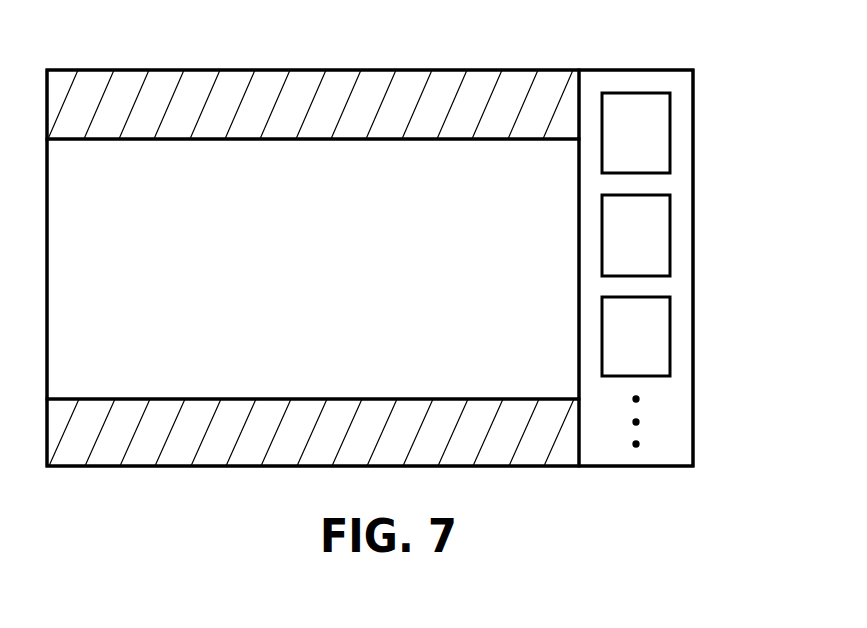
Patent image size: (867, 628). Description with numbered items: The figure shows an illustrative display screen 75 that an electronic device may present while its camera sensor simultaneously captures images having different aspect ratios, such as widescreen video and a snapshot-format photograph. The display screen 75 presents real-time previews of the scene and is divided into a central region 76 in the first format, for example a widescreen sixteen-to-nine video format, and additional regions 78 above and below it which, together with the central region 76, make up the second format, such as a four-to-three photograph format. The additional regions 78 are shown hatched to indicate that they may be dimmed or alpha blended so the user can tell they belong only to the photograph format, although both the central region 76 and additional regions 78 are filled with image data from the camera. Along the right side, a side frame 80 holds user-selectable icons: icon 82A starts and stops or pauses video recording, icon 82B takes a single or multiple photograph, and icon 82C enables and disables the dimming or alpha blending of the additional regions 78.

The display screen 75 is at (126, 32).
The central region 76 is at (327, 278).
The additional regions 78 is at (229, 83).
The side frame 80 is at (693, 58).
The icon 82A is at (658, 133).
The icon 82B is at (658, 235).
The icon 82C is at (658, 337).